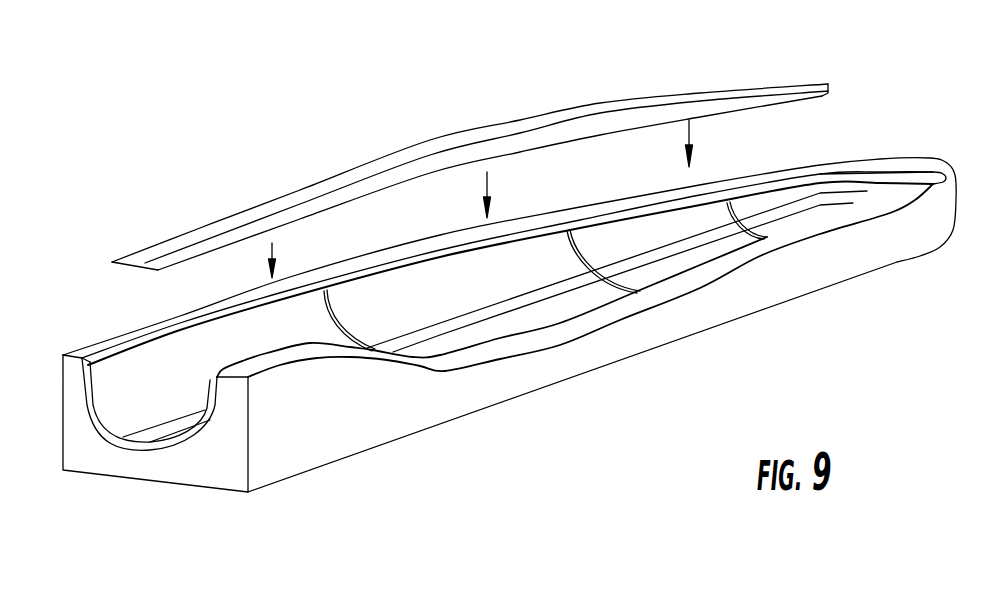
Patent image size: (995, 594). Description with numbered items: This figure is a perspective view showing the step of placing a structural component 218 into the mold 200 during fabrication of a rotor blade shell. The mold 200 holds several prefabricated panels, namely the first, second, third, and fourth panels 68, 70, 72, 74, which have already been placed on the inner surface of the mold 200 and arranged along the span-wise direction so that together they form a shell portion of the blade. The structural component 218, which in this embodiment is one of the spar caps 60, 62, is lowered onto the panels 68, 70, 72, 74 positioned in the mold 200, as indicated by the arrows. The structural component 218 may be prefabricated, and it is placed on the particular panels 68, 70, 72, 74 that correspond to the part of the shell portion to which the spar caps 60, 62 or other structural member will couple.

The mold 200 is at (327, 415).
The first panel 68 is at (123, 377).
The second panel 70 is at (485, 297).
The third panel 72 is at (653, 238).
The fourth panel 74 is at (778, 203).
The spar cap 60 is at (470, 160).
The spar cap 62 is at (312, 187).
The structural component 218 is at (410, 106).